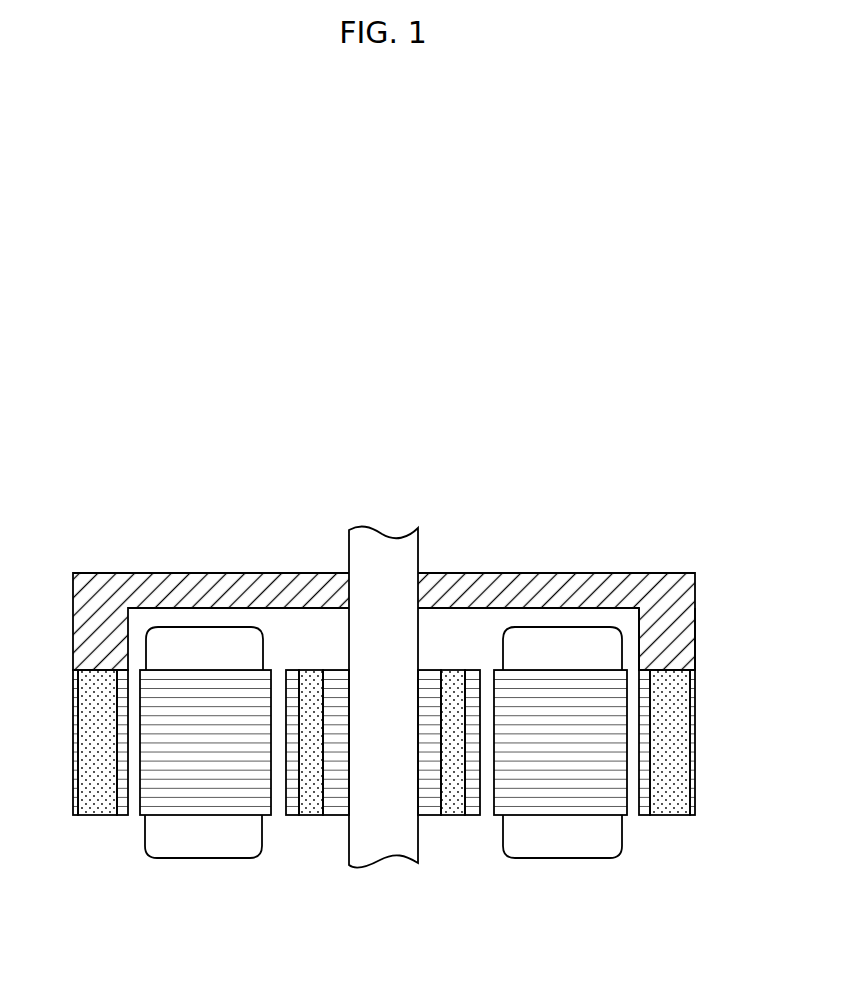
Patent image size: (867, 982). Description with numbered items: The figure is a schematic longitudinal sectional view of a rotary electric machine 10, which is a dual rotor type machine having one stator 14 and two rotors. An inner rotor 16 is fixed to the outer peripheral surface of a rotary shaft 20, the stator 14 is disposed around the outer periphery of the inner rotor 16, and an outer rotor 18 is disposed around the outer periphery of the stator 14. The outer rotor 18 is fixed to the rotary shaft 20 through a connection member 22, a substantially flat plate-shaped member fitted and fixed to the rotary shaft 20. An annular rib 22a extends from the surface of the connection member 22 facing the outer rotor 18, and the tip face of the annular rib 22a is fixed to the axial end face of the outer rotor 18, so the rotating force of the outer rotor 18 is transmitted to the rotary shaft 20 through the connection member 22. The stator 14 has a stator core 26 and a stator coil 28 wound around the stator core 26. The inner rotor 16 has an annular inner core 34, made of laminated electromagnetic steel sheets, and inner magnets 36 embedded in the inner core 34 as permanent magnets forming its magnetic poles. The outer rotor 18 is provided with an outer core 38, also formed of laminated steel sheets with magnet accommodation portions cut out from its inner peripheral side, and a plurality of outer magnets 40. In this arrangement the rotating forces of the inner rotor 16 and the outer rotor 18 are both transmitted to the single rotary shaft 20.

The rotary electric machine 10 is at (388, 493).
The stator 14 is at (383, 802).
The inner rotor 16 is at (448, 832).
The outer rotor 18 is at (672, 832).
The rotary shaft 20 is at (412, 556).
The connection member 22 is at (525, 578).
The annular rib 22a is at (685, 652).
The stator core 26 is at (185, 795).
The stator coil 28 is at (232, 853).
The inner core 34 is at (306, 816).
The inner magnet 36 is at (332, 816).
The outer core 38 is at (75, 816).
The outer magnet 40 is at (100, 816).